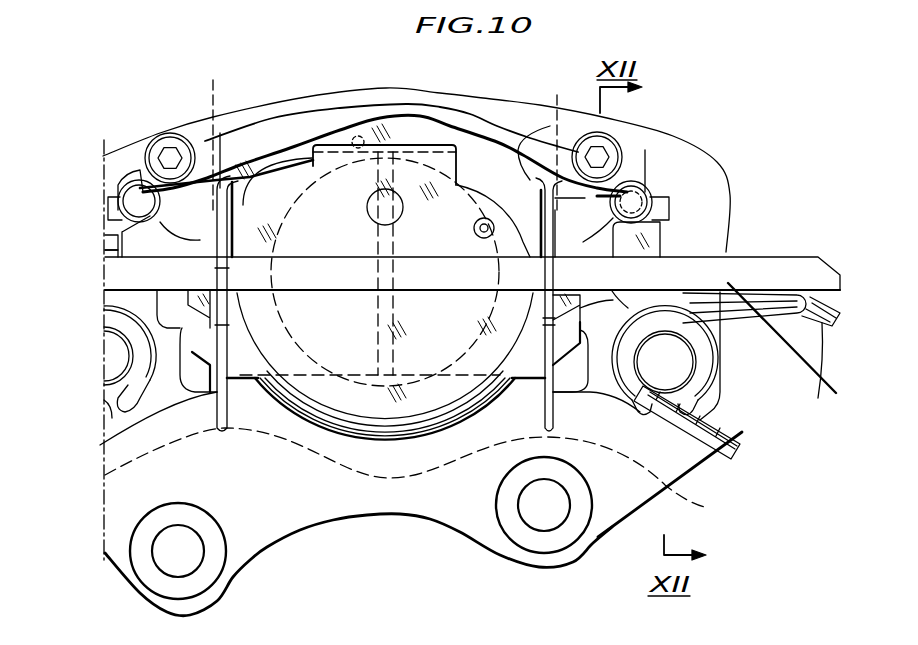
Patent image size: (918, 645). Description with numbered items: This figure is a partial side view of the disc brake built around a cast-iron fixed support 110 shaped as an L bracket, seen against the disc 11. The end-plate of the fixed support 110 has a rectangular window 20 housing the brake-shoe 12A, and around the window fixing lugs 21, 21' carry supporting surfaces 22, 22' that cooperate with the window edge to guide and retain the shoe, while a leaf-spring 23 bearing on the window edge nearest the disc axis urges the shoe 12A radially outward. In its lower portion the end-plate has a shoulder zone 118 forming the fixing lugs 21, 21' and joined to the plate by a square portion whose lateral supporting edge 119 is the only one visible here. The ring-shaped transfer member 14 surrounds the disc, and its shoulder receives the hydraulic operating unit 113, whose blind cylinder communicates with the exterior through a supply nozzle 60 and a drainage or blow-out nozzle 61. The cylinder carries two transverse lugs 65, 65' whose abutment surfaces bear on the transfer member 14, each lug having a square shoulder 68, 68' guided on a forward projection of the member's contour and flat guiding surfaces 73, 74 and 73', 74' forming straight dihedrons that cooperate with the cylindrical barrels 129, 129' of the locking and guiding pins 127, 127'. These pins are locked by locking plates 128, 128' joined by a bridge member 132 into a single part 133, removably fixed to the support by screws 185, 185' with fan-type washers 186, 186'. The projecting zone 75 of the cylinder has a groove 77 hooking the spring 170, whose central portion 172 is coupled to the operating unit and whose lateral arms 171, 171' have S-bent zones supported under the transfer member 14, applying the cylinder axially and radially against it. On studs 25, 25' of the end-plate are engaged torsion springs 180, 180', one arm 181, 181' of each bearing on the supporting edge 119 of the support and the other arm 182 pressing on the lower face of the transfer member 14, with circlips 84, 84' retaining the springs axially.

The disc 11 is at (791, 322).
The brake-shoe 12A is at (202, 382).
The transfer member 14 is at (826, 246).
The window 20 is at (595, 341).
The fixing lug 21 is at (530, 537).
The fixing lug 21' is at (203, 560).
The supporting surface 22 is at (556, 150).
The supporting surface 22' is at (214, 146).
The leaf-spring 23 is at (466, 430).
The stud 25 is at (690, 360).
The stud 25' is at (109, 359).
The supply nozzle 60 is at (400, 214).
The drainage or blow-out nozzle 61 is at (472, 223).
The transverse lug 65 is at (679, 231).
The transverse lug 65' is at (88, 276).
The square shoulder 68 is at (472, 273).
The square shoulder 68' is at (159, 296).
The flat guiding surface 73 is at (581, 230).
The flat guiding surface 73' is at (149, 236).
The flat guiding surface 74 is at (587, 238).
The flat guiding surface 74' is at (88, 237).
The projecting zone 75 is at (336, 237).
The groove 77 is at (322, 165).
The circlip 84 is at (606, 402).
The circlip 84' is at (133, 426).
The fixed support 110 is at (698, 172).
The hydraulic operating unit 113 is at (527, 196).
The shoulder zone 118 is at (675, 486).
The supporting edge 119 is at (723, 400).
The locking and guiding pin 127 is at (676, 175).
The locking and guiding pin 127' is at (109, 192).
The locking plate 128 is at (663, 151).
The locking plate 128' is at (120, 155).
The cylindrical barrel 129 is at (698, 206).
The cylindrical barrel 129' is at (89, 173).
The bridge member 132 is at (390, 99).
The single part 133 is at (296, 92).
The spring 170 is at (240, 407).
The lateral arm 171 is at (523, 306).
The lateral arm 171' is at (233, 406).
The central portion 172 is at (466, 143).
The torsion spring 180 is at (723, 439).
The torsion spring 180' is at (88, 460).
The arm 181 is at (742, 415).
The arm 181' is at (85, 370).
The arm 182 is at (783, 355).
The screw 185 is at (610, 144).
The screw 185' is at (170, 136).
The fan-type washer 186 is at (621, 152).
The fan-type washer 186' is at (183, 221).